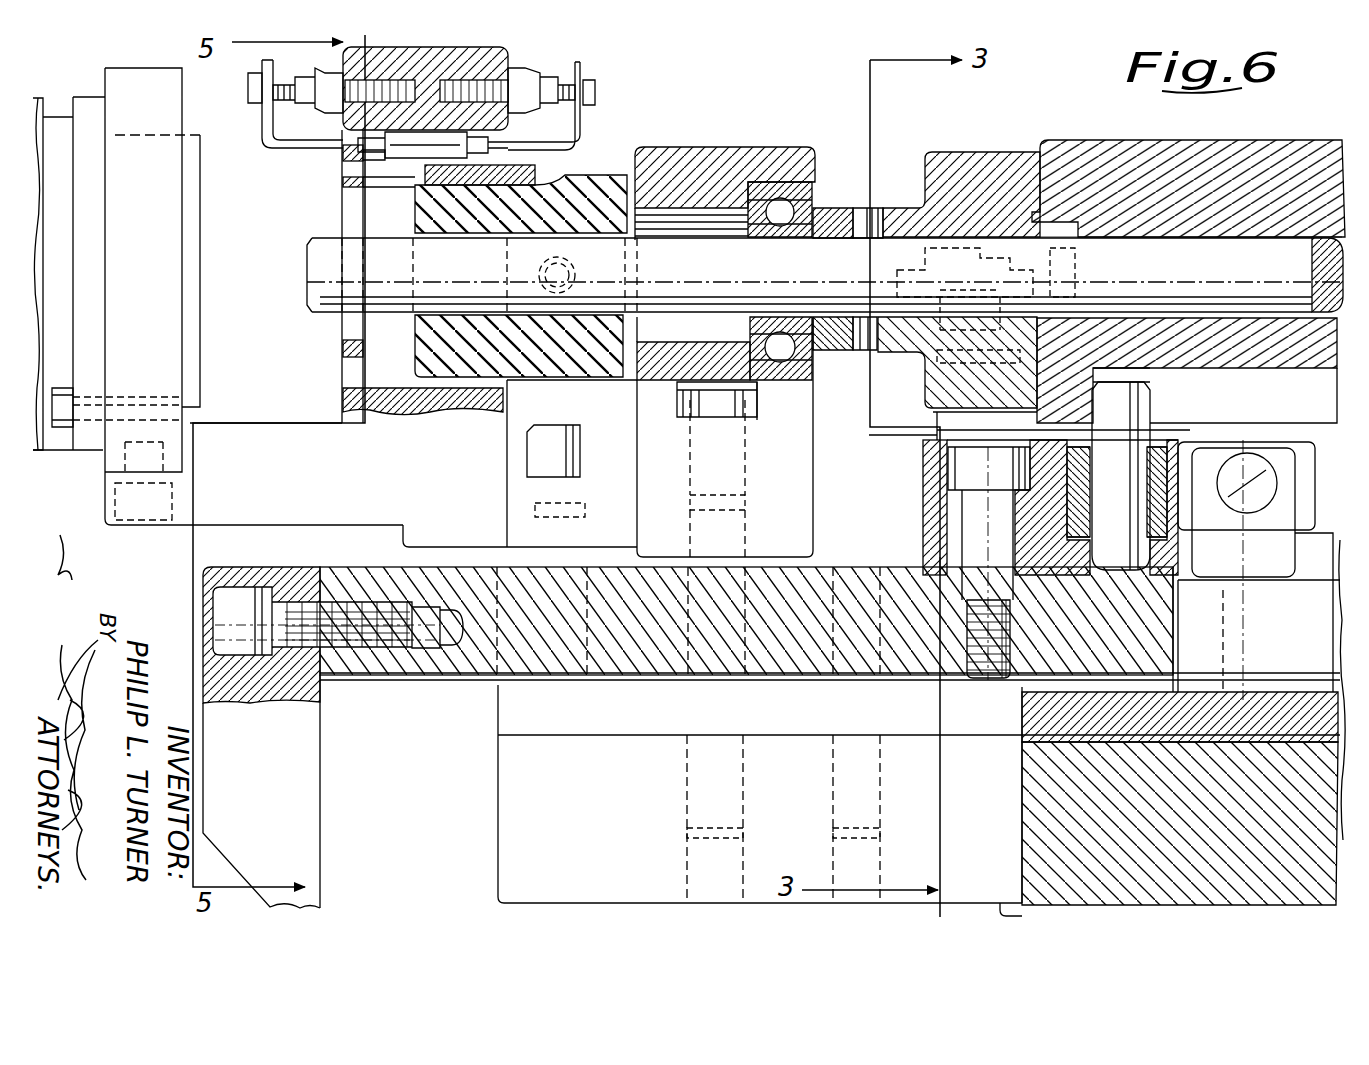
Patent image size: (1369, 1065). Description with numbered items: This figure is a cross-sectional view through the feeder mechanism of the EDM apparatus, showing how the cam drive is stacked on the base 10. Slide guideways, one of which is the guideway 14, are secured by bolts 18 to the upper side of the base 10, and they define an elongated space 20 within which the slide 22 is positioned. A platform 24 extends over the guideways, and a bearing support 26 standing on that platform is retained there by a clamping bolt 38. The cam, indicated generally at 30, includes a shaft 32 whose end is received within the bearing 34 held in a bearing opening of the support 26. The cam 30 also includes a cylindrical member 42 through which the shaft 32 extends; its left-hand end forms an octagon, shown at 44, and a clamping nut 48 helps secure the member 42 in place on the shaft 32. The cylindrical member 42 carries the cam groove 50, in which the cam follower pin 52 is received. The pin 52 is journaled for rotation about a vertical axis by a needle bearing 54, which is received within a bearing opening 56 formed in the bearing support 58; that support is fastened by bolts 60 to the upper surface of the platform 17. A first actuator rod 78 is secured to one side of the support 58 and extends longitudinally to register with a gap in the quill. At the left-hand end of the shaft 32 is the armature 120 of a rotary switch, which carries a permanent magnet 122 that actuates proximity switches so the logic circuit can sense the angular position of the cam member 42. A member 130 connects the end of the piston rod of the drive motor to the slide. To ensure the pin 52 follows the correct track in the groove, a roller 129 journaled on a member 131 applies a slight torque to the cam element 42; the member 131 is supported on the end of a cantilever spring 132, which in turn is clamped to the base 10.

The base 10 is at (1018, 829).
The slide guideway 14 is at (507, 705).
The platform 17 is at (943, 664).
The bolts 18 is at (527, 444).
The elongated space 20 is at (785, 648).
The slide 22 is at (637, 652).
The platform 24 is at (940, 557).
The bearing support 26 is at (780, 147).
The cam 30 is at (1058, 138).
The shaft 32 is at (310, 312).
The bearing 34 is at (650, 147).
The clamping bolt 38 is at (680, 408).
The cylindrical member 42 is at (1297, 140).
The octagon 44 is at (975, 152).
The clamping nut 48 is at (875, 208).
The cam groove 50 is at (1223, 373).
The pin 52 is at (1140, 396).
The needle bearing 54 is at (1068, 498).
The bearing opening 56 is at (1068, 470).
The bearing support 58 is at (935, 505).
The bolts 60 is at (925, 470).
The first actuator rod 78 is at (1315, 530).
The armature 120 is at (440, 212).
The permanent magnet 122 is at (535, 175).
The roller 129 is at (948, 255).
The member 130 is at (320, 780).
The member 131 is at (1060, 262).
The cantilever spring 132 is at (937, 420).